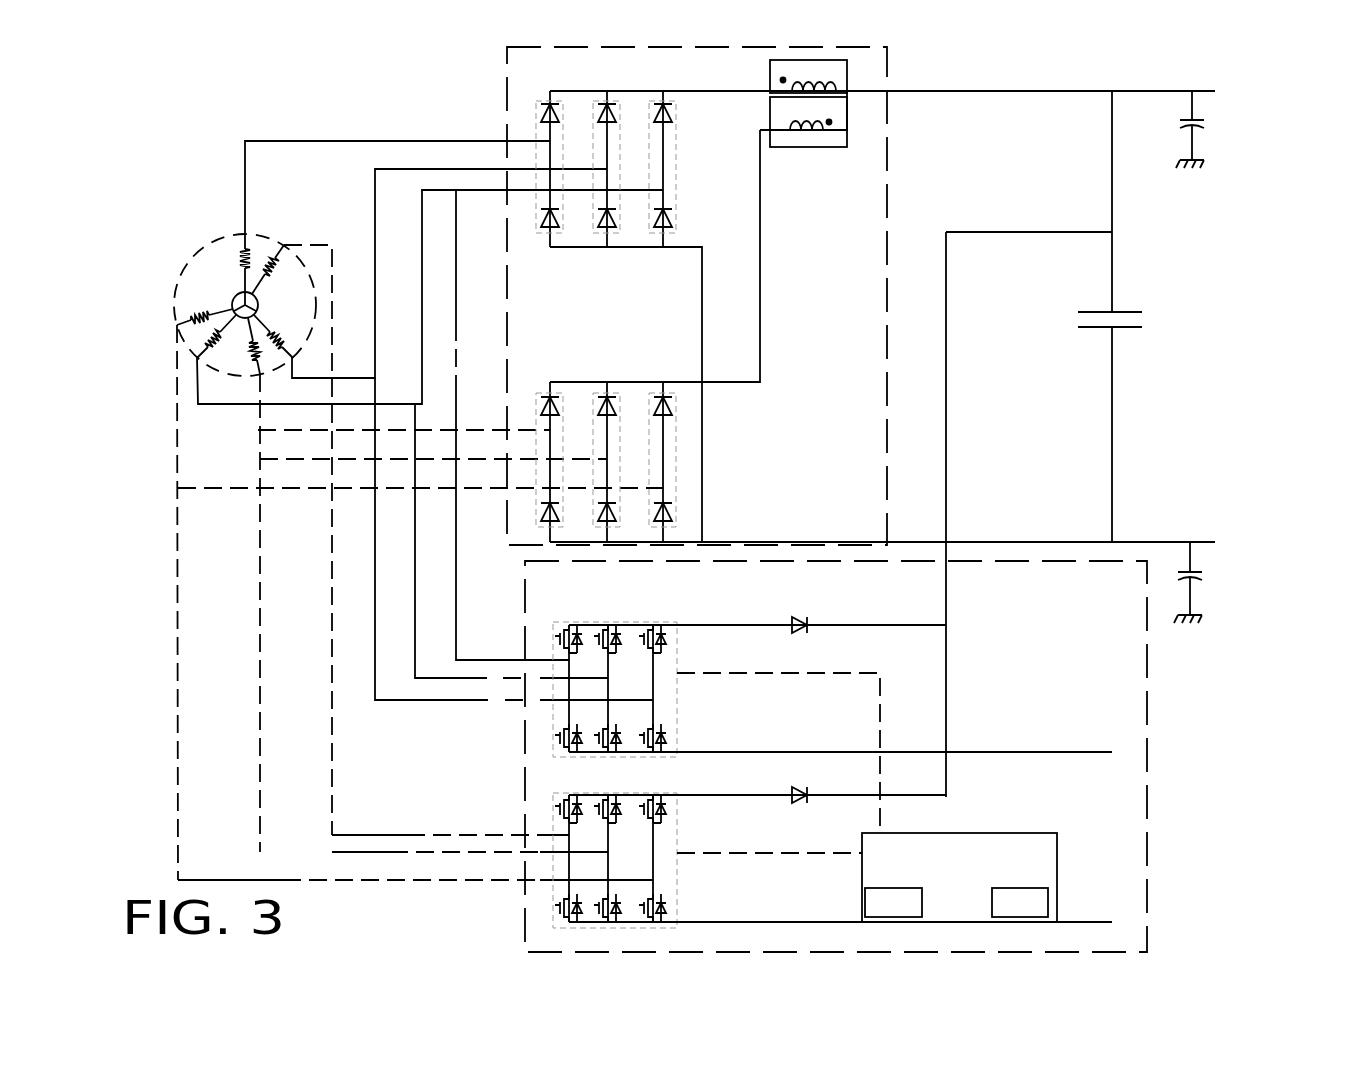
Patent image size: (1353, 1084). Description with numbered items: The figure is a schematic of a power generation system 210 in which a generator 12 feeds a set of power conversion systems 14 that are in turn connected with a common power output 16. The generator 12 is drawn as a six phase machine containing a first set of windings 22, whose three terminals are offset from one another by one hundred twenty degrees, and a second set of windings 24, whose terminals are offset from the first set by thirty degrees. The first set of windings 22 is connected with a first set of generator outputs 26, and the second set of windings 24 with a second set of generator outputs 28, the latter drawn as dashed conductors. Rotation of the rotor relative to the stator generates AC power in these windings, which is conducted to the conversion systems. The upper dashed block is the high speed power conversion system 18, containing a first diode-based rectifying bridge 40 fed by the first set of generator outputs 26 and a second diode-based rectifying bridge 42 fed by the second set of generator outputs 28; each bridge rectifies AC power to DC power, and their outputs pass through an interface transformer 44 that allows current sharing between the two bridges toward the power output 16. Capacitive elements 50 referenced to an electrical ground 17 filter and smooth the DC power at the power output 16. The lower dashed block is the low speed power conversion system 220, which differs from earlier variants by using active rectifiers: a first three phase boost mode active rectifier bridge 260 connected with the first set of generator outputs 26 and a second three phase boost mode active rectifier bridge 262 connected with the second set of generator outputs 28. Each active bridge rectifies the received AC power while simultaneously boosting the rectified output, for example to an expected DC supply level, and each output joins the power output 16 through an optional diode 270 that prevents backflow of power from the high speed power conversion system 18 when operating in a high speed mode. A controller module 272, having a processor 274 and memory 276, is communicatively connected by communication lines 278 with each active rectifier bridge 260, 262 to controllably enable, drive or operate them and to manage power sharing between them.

The power generation system 210 is at (214, 96).
The generator 12 is at (216, 237).
The first set of windings 22 is at (182, 265).
The second set of windings 24 is at (168, 300).
The first set of generator outputs 26 is at (472, 188).
The second set of generator outputs 28 is at (258, 422).
The high speed power conversion system 18 is at (887, 171).
The first diode-based rectifying bridge 40 is at (681, 186).
The second diode-based rectifying bridge 42 is at (681, 462).
The interface transformer 44 is at (805, 148).
The set of power conversion systems 14 is at (998, 83).
The power output 16 is at (1148, 87).
The capacitive elements 50 is at (1211, 120).
The electrical ground 17 is at (1211, 163).
The low speed power conversion system 220 is at (1148, 775).
The first three phase boost mode active rectifier bridge 260 is at (684, 718).
The second three phase boost mode active rectifier bridge 262 is at (684, 902).
The diode 270 is at (814, 604).
The communication lines 278 is at (818, 673).
The controller module 272 is at (982, 916).
The processor 274 is at (918, 916).
The memory 276 is at (1045, 916).